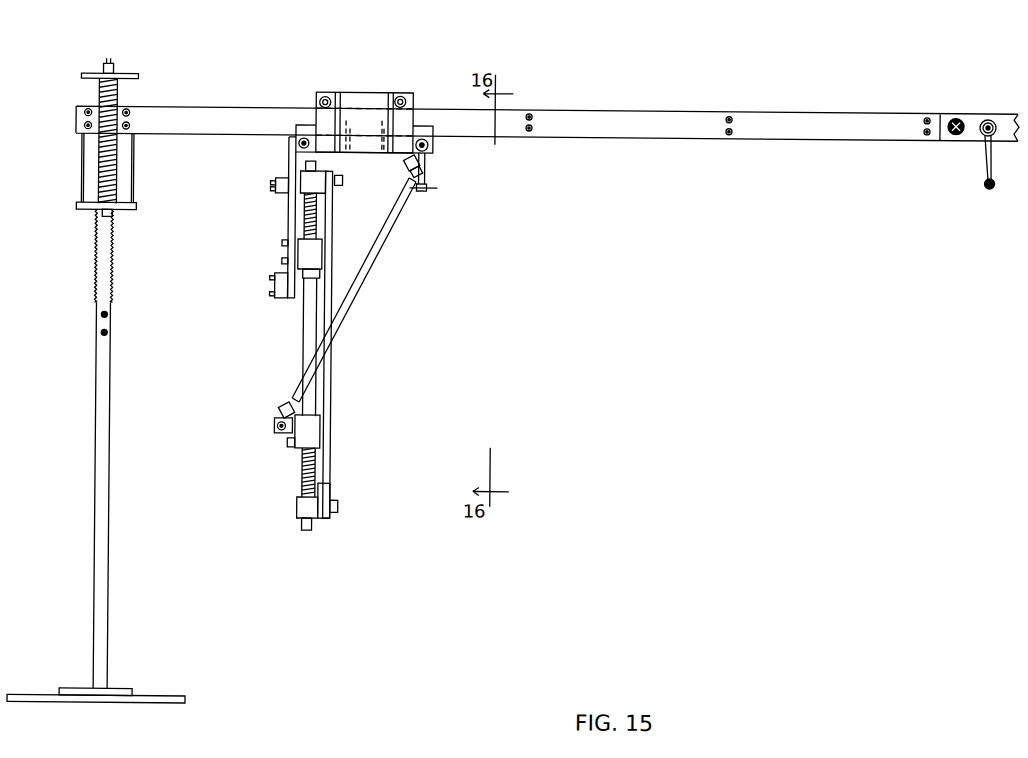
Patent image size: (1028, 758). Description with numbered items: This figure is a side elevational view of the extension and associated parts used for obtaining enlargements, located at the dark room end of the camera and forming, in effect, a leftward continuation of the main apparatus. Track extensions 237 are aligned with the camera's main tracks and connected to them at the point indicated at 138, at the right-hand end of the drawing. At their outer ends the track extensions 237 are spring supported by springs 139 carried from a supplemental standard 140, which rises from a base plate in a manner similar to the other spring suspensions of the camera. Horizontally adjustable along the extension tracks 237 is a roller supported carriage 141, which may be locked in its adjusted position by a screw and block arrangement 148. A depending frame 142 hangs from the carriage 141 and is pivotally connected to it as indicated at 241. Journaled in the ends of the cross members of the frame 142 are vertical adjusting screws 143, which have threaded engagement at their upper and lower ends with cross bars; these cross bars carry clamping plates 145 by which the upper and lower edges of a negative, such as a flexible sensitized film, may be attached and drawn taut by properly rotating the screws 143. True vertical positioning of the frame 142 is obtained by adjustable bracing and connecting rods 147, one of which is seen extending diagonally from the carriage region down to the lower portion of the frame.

The connection 138 is at (962, 115).
The springs 139 is at (103, 102).
The supplemental standard 140 is at (104, 445).
The roller supported carriage 141 is at (372, 100).
The depending frame 142 is at (293, 230).
The vertical adjusting screws 143 is at (314, 340).
The clamping plates 145 is at (338, 351).
The adjustable bracing and connecting rods 147 is at (356, 281).
The screw and block arrangement 148 is at (430, 169).
The track extensions 237 is at (582, 116).
The pivotal connection 241 is at (300, 143).